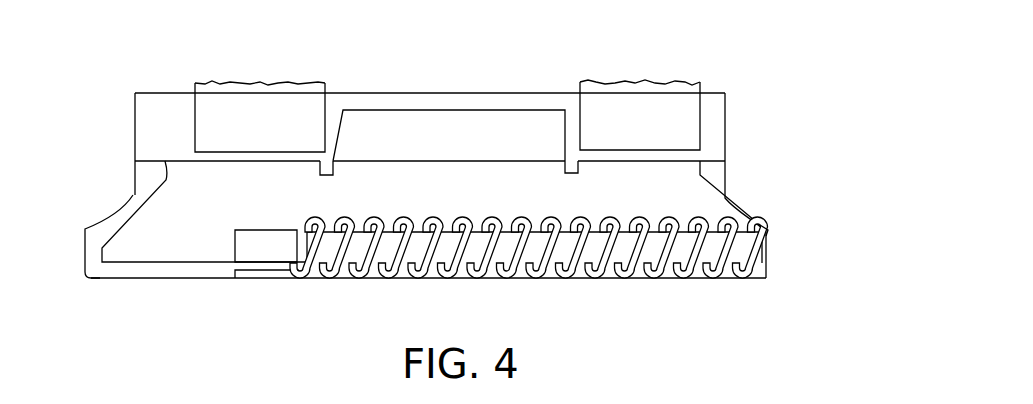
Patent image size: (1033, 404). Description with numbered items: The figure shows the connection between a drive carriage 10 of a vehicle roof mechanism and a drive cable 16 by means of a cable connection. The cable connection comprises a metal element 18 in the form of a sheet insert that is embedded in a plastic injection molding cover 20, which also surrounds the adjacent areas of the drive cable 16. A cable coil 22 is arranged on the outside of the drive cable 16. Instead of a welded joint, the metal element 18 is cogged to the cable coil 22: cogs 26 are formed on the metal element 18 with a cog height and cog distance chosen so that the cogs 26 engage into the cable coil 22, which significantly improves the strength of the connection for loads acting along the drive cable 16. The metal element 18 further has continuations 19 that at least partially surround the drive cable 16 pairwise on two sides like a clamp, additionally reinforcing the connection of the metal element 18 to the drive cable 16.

The drive carriage 10 is at (255, 118).
The drive cable 16 is at (768, 244).
The metal element 18 is at (173, 223).
The continuations 19 is at (277, 273).
The plastic injection molding cover 20 is at (150, 272).
The cable coil 22 is at (625, 278).
The cogs 26 is at (450, 225).